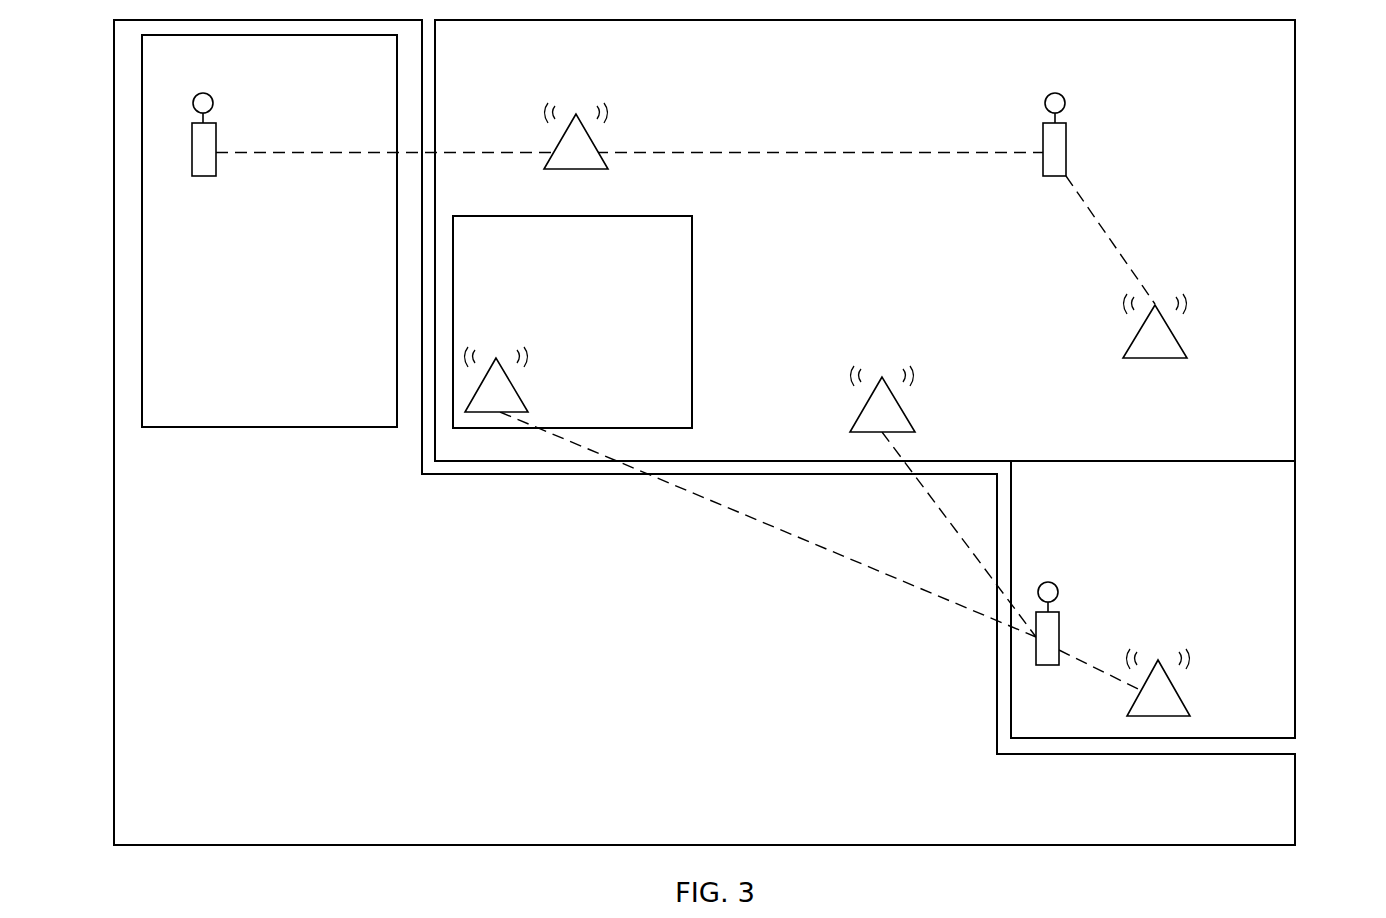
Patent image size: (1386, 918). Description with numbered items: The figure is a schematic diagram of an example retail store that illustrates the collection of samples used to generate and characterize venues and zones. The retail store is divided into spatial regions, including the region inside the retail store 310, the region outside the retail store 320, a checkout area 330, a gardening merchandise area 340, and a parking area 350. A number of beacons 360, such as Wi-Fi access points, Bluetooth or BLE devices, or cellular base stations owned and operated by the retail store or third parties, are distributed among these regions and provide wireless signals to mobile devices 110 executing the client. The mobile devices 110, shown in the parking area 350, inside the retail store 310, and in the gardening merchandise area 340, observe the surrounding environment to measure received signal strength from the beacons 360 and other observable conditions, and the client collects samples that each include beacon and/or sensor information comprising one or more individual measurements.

The mobile device 110 is at (216, 133).
The inside the retail store 310 is at (1295, 93).
The outside the retail store 320 is at (115, 527).
The checkout area 330 is at (692, 313).
The gardening merchandise area 340 is at (1295, 592).
The parking area 350 is at (303, 427).
The beacon 360 is at (590, 134).